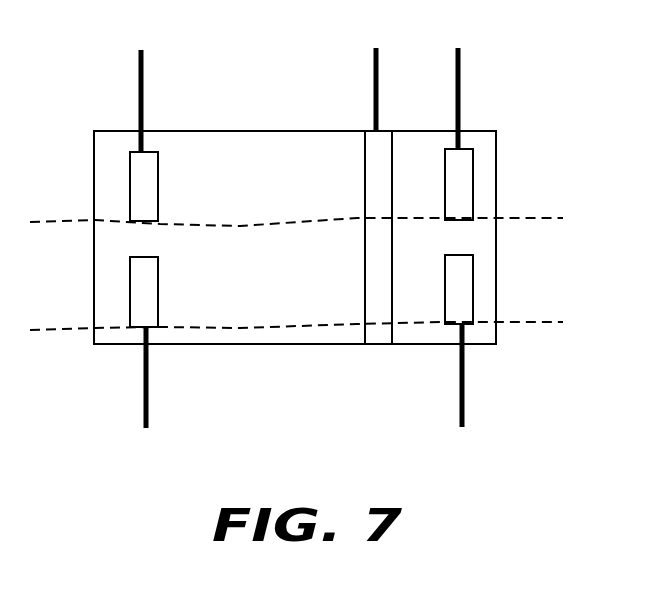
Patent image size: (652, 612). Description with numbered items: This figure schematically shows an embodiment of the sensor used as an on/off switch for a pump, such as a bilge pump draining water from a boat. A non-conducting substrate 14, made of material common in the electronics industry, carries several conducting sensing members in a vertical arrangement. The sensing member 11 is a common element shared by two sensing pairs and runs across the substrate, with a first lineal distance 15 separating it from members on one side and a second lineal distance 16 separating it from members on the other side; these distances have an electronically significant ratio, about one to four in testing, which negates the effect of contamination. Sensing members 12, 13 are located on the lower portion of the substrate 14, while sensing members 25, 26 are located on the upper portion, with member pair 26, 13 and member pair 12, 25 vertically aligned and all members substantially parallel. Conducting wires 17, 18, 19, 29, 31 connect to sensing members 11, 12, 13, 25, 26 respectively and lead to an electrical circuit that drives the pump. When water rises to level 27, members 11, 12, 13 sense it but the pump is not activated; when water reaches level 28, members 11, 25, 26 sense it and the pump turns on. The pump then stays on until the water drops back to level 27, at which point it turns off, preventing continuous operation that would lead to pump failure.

The conducting sensing member 11 is at (363, 157).
The conducting sensing member 12 is at (475, 292).
The conducting sensing member 13 is at (130, 288).
The non-conducting substrate 14 is at (94, 130).
The first lineal distance 15 is at (417, 182).
The second lineal distance 16 is at (247, 177).
The conducting wire 17 is at (372, 72).
The conducting wire 18 is at (466, 392).
The conducting wire 19 is at (143, 385).
The sensing member 25 is at (473, 184).
The sensing member 26 is at (128, 188).
The water level 27 is at (545, 325).
The water level 28 is at (545, 220).
The conducting wire 29 is at (461, 75).
The conducting wire 31 is at (139, 94).